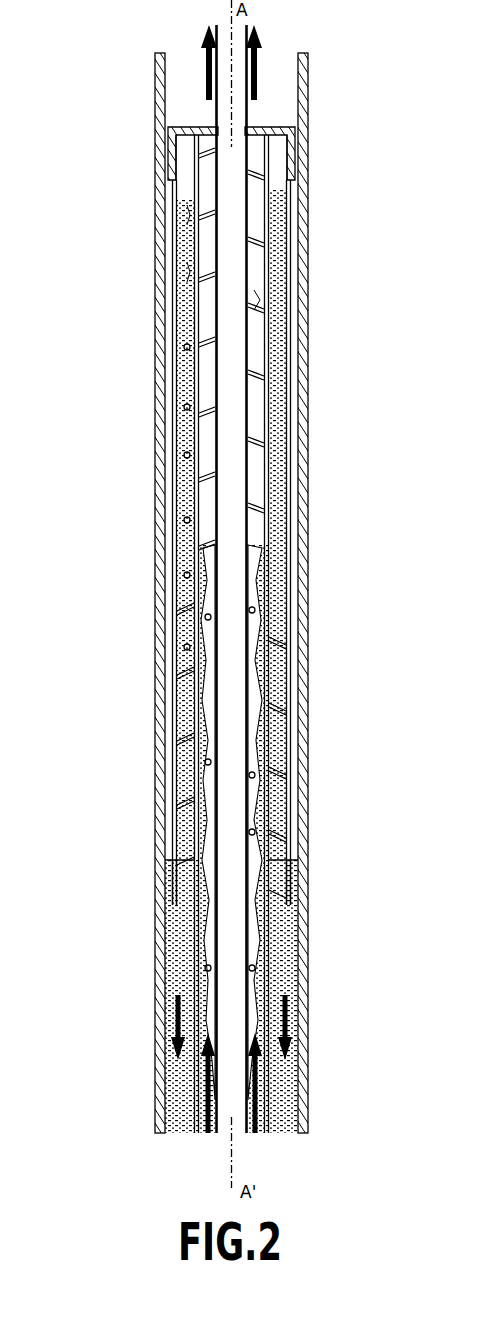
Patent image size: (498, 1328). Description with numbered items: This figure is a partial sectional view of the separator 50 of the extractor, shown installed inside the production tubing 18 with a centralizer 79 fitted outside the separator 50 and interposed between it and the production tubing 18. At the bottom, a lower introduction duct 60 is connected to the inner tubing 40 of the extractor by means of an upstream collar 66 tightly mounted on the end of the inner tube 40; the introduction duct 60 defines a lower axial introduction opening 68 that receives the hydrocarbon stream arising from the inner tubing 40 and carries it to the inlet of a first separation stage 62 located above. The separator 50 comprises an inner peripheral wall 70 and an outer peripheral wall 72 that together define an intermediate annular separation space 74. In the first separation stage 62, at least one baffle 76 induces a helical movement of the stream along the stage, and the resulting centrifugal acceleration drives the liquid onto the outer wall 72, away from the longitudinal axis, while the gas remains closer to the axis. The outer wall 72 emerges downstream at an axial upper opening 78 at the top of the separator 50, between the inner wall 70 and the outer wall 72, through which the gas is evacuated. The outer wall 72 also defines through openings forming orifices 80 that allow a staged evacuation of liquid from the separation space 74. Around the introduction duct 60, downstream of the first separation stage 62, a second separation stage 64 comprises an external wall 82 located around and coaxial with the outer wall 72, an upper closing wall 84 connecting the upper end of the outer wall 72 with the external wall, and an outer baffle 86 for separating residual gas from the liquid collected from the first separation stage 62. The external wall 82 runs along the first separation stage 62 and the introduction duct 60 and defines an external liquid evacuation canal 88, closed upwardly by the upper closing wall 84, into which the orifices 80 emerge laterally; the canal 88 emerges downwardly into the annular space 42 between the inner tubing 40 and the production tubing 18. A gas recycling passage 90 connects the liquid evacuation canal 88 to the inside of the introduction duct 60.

The production tubing 18 is at (155, 306).
The inner tubing 40 is at (168, 1096).
The annular space 42 is at (284, 1090).
The separator 50 is at (168, 537).
The introduction duct 60 is at (168, 921).
The first separation stage 62 is at (174, 422).
The second separation stage 64 is at (306, 537).
The upstream collar 66 is at (284, 974).
The lower axial introduction opening 68 is at (190, 968).
The inner peripheral wall 70 is at (260, 338).
The outer peripheral wall 72 is at (268, 247).
The intermediate annular separation space 74 is at (258, 205).
The baffle 76 is at (262, 300).
The axial upper opening 78 is at (254, 147).
The centralizer 79 is at (300, 165).
The orifice 80 is at (190, 270).
The external wall 82 is at (280, 601).
The upper closing wall 84 is at (282, 128).
The outer baffle 86 is at (284, 781).
The external liquid evacuation canal 88 is at (272, 403).
The gas recycling passage 90 is at (176, 548).